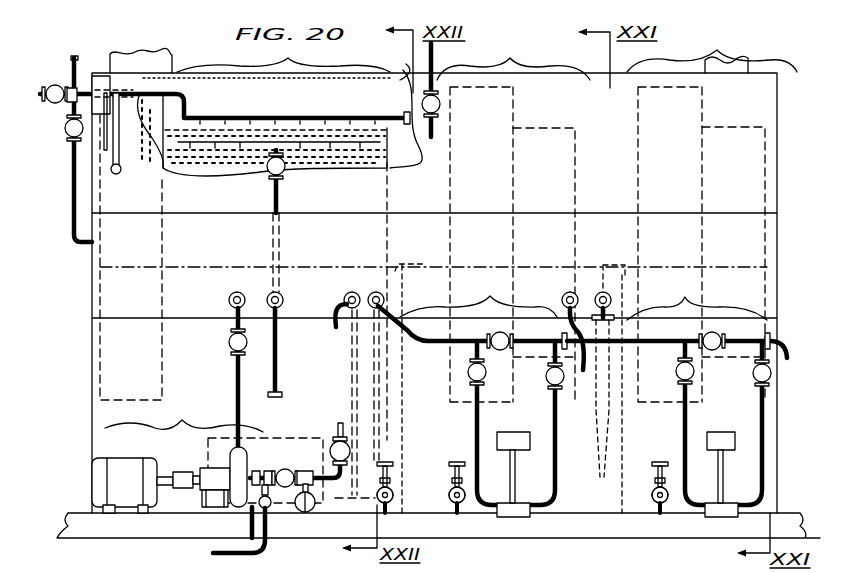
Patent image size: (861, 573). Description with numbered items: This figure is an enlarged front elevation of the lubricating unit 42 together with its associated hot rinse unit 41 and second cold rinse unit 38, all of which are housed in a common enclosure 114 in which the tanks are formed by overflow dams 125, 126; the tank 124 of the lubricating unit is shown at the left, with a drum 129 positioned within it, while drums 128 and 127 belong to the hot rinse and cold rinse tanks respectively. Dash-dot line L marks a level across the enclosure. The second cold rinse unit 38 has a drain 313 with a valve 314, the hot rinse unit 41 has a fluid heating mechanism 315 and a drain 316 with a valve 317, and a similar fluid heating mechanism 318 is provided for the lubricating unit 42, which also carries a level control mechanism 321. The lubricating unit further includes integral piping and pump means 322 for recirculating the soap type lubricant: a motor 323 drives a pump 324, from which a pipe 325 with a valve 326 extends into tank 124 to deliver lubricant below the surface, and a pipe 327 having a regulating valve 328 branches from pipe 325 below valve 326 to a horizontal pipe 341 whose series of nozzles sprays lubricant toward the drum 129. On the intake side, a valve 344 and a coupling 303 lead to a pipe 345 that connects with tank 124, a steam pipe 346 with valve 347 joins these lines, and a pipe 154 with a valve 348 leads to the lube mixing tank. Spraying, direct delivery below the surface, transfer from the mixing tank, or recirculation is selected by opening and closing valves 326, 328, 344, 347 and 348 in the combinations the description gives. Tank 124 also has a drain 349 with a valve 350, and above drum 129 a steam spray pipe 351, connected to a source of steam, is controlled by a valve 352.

The valve 352 is at (55, 86).
The steam spray pipe 351 is at (238, 116).
The horizontal pipe 341 is at (305, 127).
The drum 129 is at (397, 112).
The drum 128 is at (544, 127).
The drum 127 is at (749, 127).
The enclosure 114 is at (758, 98).
The level control mechanism 321 is at (88, 250).
The regulating valve 328 is at (285, 172).
The overflow dam 126 is at (403, 262).
The overflow dam 125 is at (626, 263).
The fluid heating mechanism 318 is at (285, 440).
The fluid heating mechanism 315 is at (677, 398).
The valve 326 is at (228, 341).
The pipe 327 is at (283, 380).
The tank 124 is at (110, 413).
The integral piping and pump means 322 is at (214, 453).
The pipe 325 is at (235, 397).
The motor 323 is at (123, 457).
The pump 324 is at (236, 464).
The coupling 303 is at (262, 470).
The valve 344 is at (287, 468).
The valve 347 is at (337, 436).
The valve 350 is at (390, 472).
The drain 349 is at (394, 494).
The valve 317 is at (466, 458).
The drain 316 is at (459, 504).
The valve 314 is at (672, 453).
The drain 313 is at (661, 504).
The pipe 345 is at (305, 512).
The pipe 346 is at (316, 478).
The valve 348 is at (250, 518).
The pipe 154 is at (212, 553).
The hot rinse unit 41 is at (495, 50).
The lubricating unit 42 is at (283, 57).
The second cold rinse unit 38 is at (723, 52).
The liquid level L is at (200, 267).